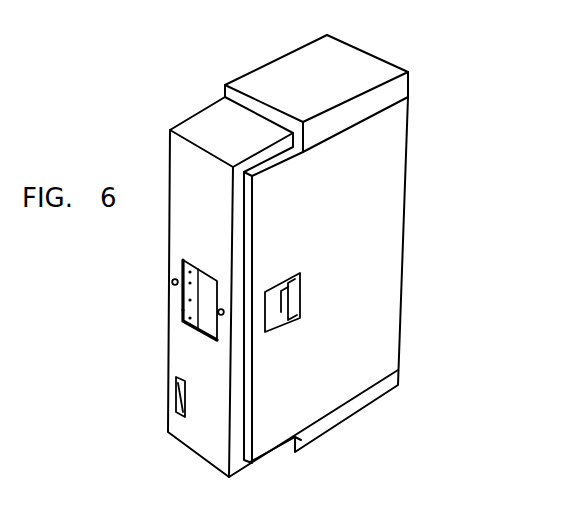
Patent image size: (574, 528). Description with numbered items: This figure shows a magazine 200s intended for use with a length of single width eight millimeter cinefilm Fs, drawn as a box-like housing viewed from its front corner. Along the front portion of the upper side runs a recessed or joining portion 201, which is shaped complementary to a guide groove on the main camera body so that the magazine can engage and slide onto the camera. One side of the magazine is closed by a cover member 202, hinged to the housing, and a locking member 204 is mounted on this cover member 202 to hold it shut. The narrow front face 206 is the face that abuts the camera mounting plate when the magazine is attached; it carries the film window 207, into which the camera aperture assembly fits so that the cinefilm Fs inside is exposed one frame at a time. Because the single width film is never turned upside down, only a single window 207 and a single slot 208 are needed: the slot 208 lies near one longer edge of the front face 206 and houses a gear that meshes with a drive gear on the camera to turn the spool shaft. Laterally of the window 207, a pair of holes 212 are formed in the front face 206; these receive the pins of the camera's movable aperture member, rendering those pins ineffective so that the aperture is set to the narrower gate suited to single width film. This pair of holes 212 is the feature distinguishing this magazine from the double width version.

The magazine 200s is at (478, 106).
The recessed or joining portion 201 is at (195, 126).
The cover member 202 is at (392, 238).
The locking member 204 is at (297, 320).
The front face 206 is at (177, 347).
The window 207 is at (183, 310).
The slot 208 is at (176, 407).
The holes 212 is at (172, 280).
The single width 8 mm cinefilm Fs is at (198, 260).